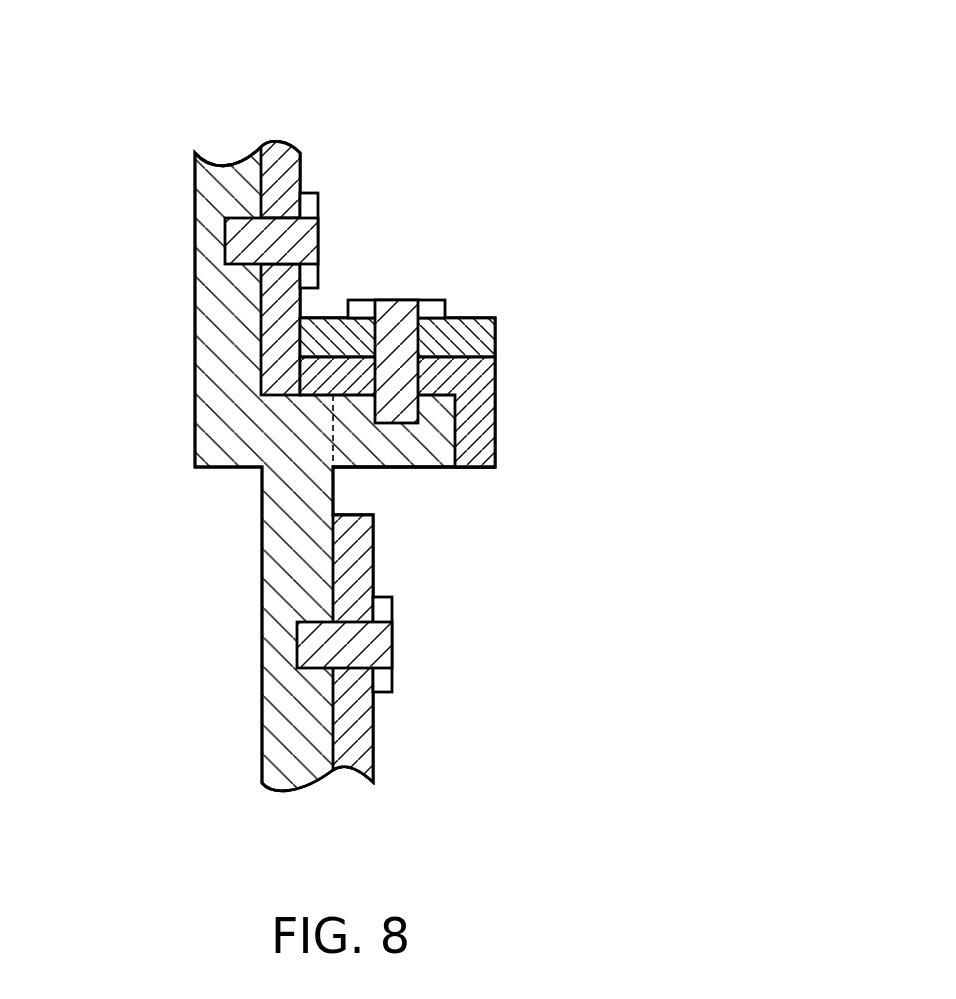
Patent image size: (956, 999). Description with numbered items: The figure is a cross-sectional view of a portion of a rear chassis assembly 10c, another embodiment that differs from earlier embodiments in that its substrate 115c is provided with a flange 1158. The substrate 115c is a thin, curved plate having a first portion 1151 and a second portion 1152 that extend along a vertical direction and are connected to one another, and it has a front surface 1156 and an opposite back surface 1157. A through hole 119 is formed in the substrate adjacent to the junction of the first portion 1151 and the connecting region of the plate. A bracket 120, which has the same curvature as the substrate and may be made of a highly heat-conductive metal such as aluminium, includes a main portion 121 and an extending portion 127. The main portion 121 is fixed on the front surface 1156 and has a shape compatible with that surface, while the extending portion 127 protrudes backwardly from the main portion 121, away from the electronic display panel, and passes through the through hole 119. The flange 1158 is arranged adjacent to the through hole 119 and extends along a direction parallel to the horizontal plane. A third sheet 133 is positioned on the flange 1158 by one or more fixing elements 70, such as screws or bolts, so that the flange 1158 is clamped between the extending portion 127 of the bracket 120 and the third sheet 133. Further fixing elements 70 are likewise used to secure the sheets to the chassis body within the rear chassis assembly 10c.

The rear chassis assembly 10c is at (359, 403).
The substrate 115c is at (345, 414).
The front surface 1156 is at (260, 167).
The back surface 1157 is at (305, 178).
The bracket 120 is at (180, 199).
The fixing element 70 is at (380, 300).
The main portion 121 is at (205, 293).
The first portion 1151 is at (273, 368).
The third sheet 133 is at (495, 340).
The flange 1158 is at (488, 378).
The extending portion 127 is at (425, 453).
The through hole 119 is at (380, 499).
The second portion 1152 is at (365, 745).